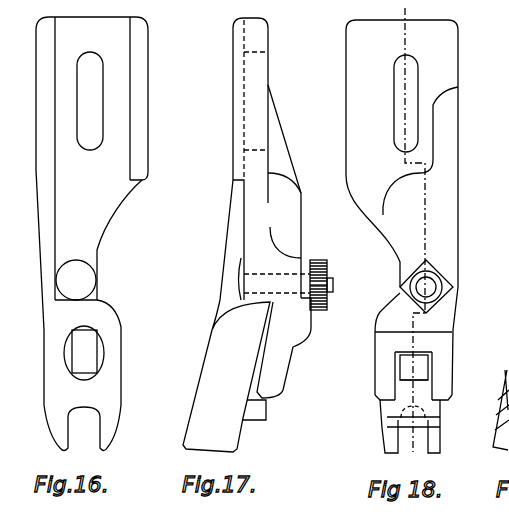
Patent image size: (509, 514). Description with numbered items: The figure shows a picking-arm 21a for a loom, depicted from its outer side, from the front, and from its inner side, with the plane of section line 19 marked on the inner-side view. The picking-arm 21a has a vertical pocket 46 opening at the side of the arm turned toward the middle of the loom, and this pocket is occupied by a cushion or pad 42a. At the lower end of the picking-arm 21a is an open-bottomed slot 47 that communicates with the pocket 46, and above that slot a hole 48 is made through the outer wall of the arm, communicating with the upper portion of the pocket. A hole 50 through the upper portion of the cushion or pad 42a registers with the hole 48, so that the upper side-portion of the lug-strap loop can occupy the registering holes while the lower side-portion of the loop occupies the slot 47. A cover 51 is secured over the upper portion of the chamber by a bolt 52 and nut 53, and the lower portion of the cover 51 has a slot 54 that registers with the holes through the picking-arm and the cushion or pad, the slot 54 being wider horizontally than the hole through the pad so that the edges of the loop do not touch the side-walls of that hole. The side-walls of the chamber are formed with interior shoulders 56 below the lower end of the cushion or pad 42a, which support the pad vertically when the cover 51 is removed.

In FIG. 18, the section line 19 is at (410, 234).
In FIG. 16, the picking-arm 21a is at (148, 155).
In FIG. 17, the picking-arm 21a is at (270, 78).
In FIG. 18, the picking-arm 21a is at (458, 68).
In FIG. 16, the cushion or pad 42a is at (100, 368).
In FIG. 17, the cushion or pad 42a is at (262, 404).
In FIG. 18, the cushion or pad 42a is at (388, 405).
In FIG. 18, the vertical pocket 46 is at (450, 286).
In FIG. 16, the open-bottomed slot 47 is at (76, 441).
In FIG. 18, the open-bottomed slot 47 is at (422, 440).
In FIG. 16, the hole 48 is at (100, 353).
In FIG. 18, the hole 48 is at (508, 343).
In FIG. 16, the hole 50 is at (70, 352).
In FIG. 18, the hole 50 is at (398, 367).
In FIG. 17, the cover 51 is at (308, 322).
In FIG. 18, the cover 51 is at (440, 313).
In FIG. 17, the bolt 52 is at (333, 288).
In FIG. 17, the nut 53 is at (328, 268).
In FIG. 18, the slot 54 is at (432, 368).
In FIG. 18, the interior shoulders 56 is at (388, 427).